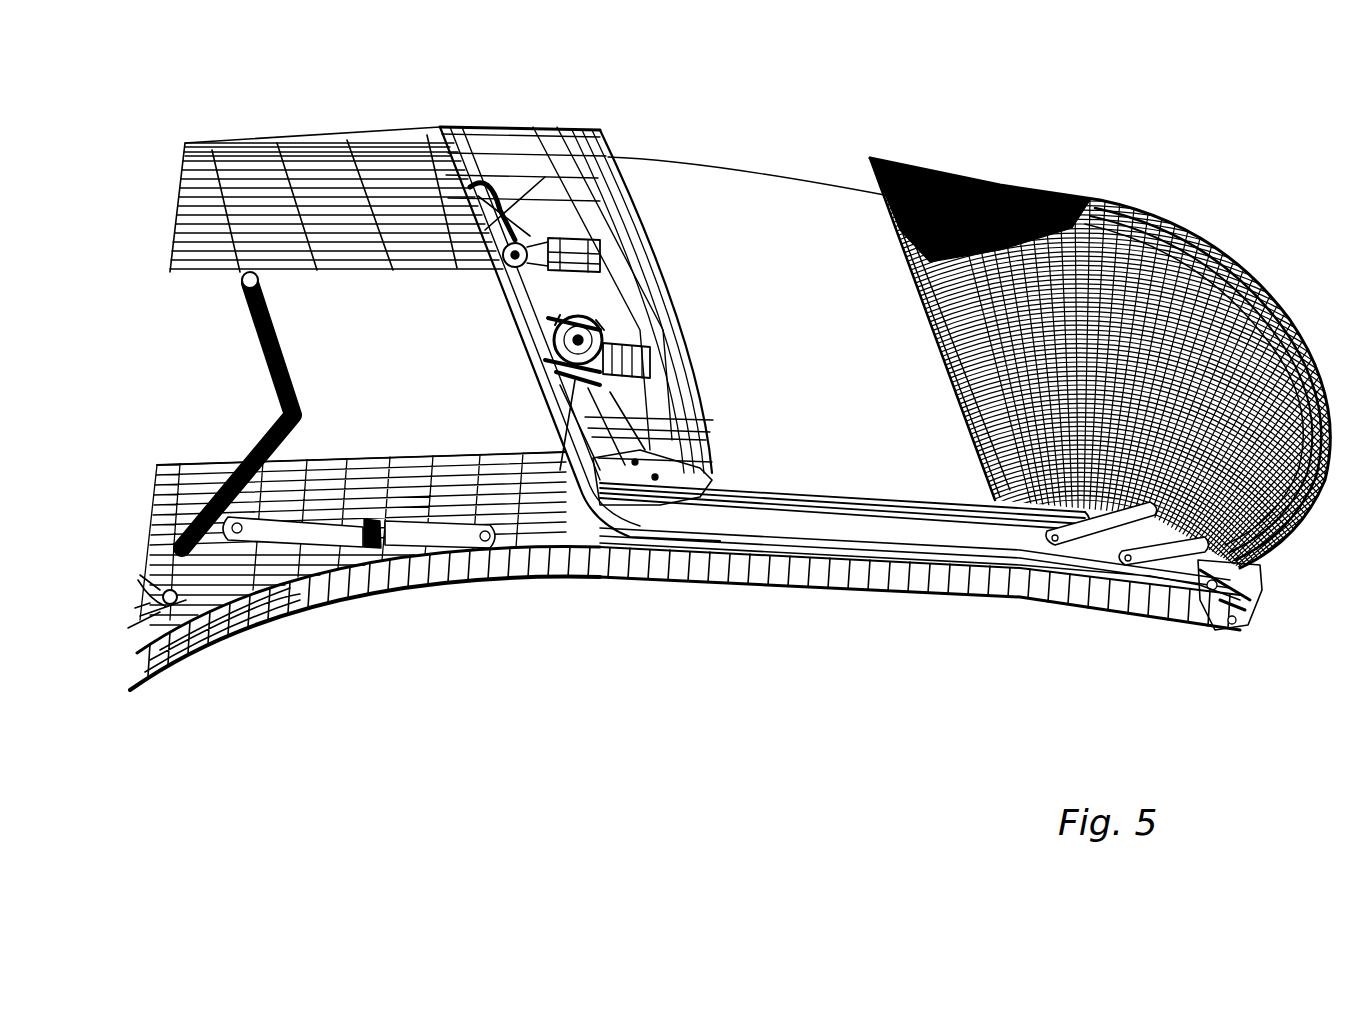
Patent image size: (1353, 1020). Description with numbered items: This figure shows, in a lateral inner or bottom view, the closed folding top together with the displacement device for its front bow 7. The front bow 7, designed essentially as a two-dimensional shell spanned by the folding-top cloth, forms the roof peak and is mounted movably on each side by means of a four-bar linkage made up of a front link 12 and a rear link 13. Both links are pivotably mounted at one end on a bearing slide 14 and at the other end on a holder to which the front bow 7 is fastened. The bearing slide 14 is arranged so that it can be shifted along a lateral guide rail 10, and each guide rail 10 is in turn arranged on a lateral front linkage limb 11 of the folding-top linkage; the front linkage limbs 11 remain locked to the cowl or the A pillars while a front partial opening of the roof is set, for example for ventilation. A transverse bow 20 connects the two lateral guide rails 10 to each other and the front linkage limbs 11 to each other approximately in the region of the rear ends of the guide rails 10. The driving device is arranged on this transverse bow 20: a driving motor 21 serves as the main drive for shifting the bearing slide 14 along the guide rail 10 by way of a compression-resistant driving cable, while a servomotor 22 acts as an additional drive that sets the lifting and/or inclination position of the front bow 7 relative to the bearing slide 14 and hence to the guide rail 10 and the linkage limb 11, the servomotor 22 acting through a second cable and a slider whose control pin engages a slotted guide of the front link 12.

The front bow 7 is at (1190, 218).
The guide rail 10 is at (683, 560).
The front linkage limb 11 is at (580, 563).
The front link 12 is at (1148, 582).
The rear link 13 is at (1087, 540).
The bearing slide 14 is at (1105, 555).
The transverse bow 20 is at (607, 140).
The driving motor 21 is at (665, 365).
The servomotor 22 is at (612, 262).